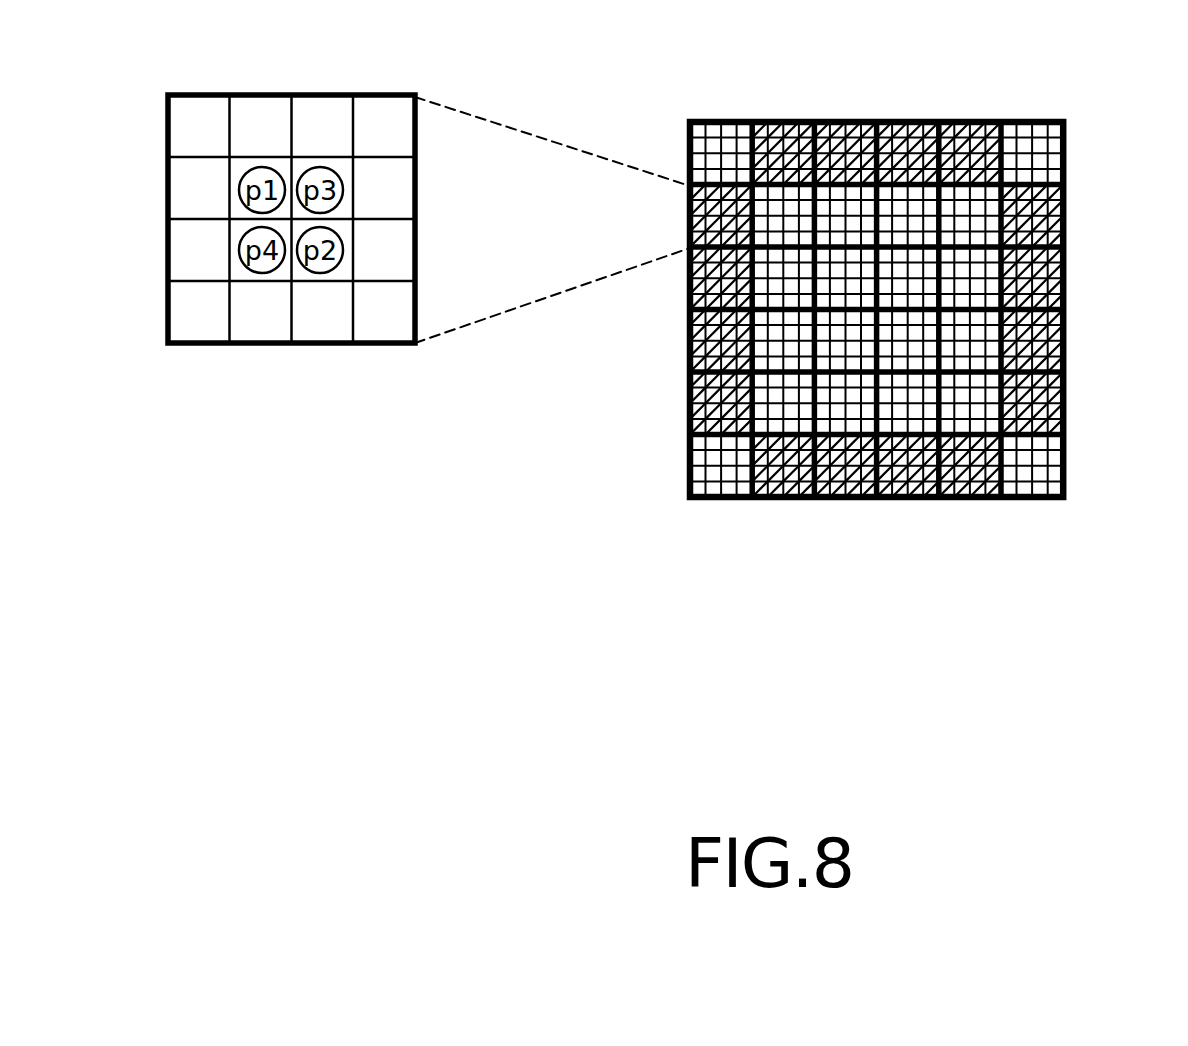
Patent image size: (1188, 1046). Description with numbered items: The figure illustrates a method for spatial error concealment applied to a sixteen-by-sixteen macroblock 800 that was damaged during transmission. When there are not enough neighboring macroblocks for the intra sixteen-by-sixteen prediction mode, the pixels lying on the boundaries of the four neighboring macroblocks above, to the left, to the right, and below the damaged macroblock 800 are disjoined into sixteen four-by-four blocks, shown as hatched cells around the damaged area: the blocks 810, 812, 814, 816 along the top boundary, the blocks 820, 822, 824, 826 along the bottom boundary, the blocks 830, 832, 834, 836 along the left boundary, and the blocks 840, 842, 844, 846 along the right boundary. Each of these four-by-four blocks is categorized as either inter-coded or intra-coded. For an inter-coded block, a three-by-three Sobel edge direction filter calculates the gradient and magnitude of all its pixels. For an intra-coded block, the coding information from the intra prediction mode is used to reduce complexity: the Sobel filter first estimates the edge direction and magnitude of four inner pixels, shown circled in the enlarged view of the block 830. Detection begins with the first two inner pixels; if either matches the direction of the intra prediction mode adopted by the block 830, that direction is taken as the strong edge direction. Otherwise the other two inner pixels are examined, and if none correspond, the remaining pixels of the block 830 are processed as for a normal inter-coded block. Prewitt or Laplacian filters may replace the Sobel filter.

The macroblock 800 is at (1017, 435).
The 4×4 block 810 is at (768, 121).
The 4×4 block 812 is at (838, 121).
The 4×4 block 814 is at (905, 121).
The 4×4 block 816 is at (975, 121).
The 4×4 block 820 is at (757, 498).
The 4×4 block 822 is at (829, 498).
The 4×4 block 824 is at (905, 498).
The 4×4 block 826 is at (975, 498).
The 4×4 block 830 is at (690, 201).
The 4×4 block 832 is at (690, 285).
The 4×4 block 834 is at (690, 355).
The 4×4 block 836 is at (690, 425).
The 4×4 block 840 is at (1066, 207).
The 4×4 block 842 is at (1066, 265).
The 4×4 block 844 is at (1066, 341).
The 4×4 block 846 is at (1066, 411).